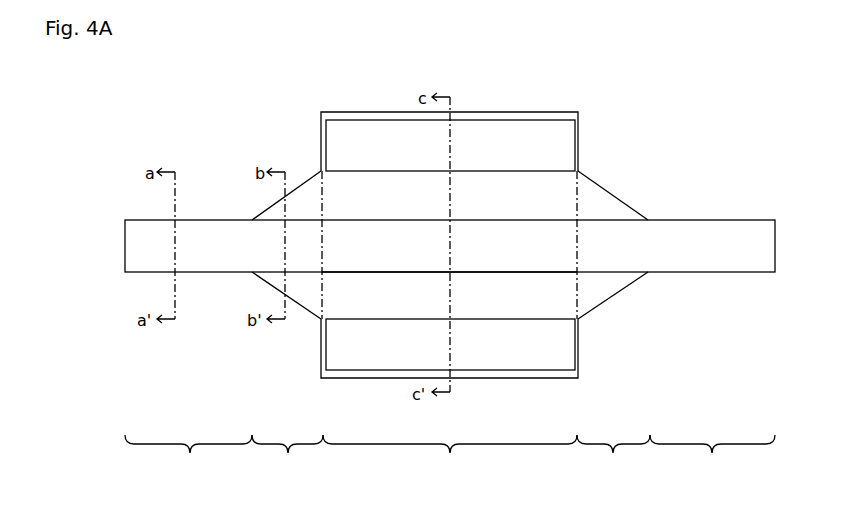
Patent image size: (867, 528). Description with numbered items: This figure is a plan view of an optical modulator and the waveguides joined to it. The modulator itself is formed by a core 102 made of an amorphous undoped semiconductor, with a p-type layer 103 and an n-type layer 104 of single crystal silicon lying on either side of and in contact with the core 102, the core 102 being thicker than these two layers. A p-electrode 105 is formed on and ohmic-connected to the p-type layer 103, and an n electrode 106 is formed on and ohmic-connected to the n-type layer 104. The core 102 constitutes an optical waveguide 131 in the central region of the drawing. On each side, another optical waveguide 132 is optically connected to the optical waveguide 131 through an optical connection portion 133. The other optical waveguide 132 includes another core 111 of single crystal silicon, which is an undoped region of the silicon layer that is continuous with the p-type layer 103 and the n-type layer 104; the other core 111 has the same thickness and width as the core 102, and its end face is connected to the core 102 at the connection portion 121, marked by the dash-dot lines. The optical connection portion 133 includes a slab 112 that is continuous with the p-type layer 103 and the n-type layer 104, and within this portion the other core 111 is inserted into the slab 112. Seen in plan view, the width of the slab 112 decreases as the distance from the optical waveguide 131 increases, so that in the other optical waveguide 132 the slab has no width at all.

The core 102 is at (373, 262).
The p-type layer 103 is at (490, 193).
The n-type layer 104 is at (514, 298).
The p-electrode 105 is at (578, 141).
The n electrode 106 is at (578, 349).
The other core 111 is at (205, 218).
The slab 112 is at (305, 196).
The connection portion 121 is at (326, 280).
The optical waveguide 131 is at (450, 457).
The other optical waveguide 132 is at (450, 457).
The optical connection portion 133 is at (451, 457).